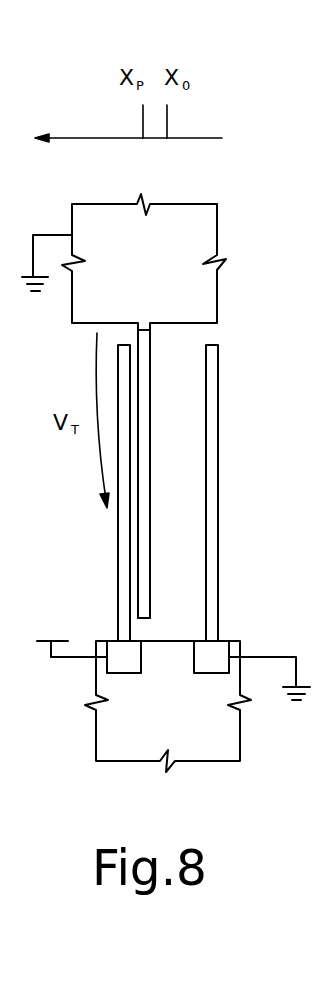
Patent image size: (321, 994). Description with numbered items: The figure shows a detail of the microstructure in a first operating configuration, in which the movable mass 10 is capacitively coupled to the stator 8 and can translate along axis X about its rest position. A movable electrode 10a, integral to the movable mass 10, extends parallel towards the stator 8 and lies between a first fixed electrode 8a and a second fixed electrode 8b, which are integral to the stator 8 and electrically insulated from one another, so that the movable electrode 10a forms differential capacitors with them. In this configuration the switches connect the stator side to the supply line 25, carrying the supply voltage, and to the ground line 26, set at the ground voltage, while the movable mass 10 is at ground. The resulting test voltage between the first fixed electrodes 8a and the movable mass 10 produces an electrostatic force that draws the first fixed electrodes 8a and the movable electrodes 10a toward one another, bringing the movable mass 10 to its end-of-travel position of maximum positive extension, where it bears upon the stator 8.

The movable mass 10 is at (125, 207).
The movable electrodes 10a is at (150, 473).
The stator 8 is at (192, 757).
The first fixed electrodes 8a is at (118, 558).
The second fixed electrodes 8b is at (218, 503).
The supply line 25 is at (43, 648).
The ground line 26 is at (49, 280).